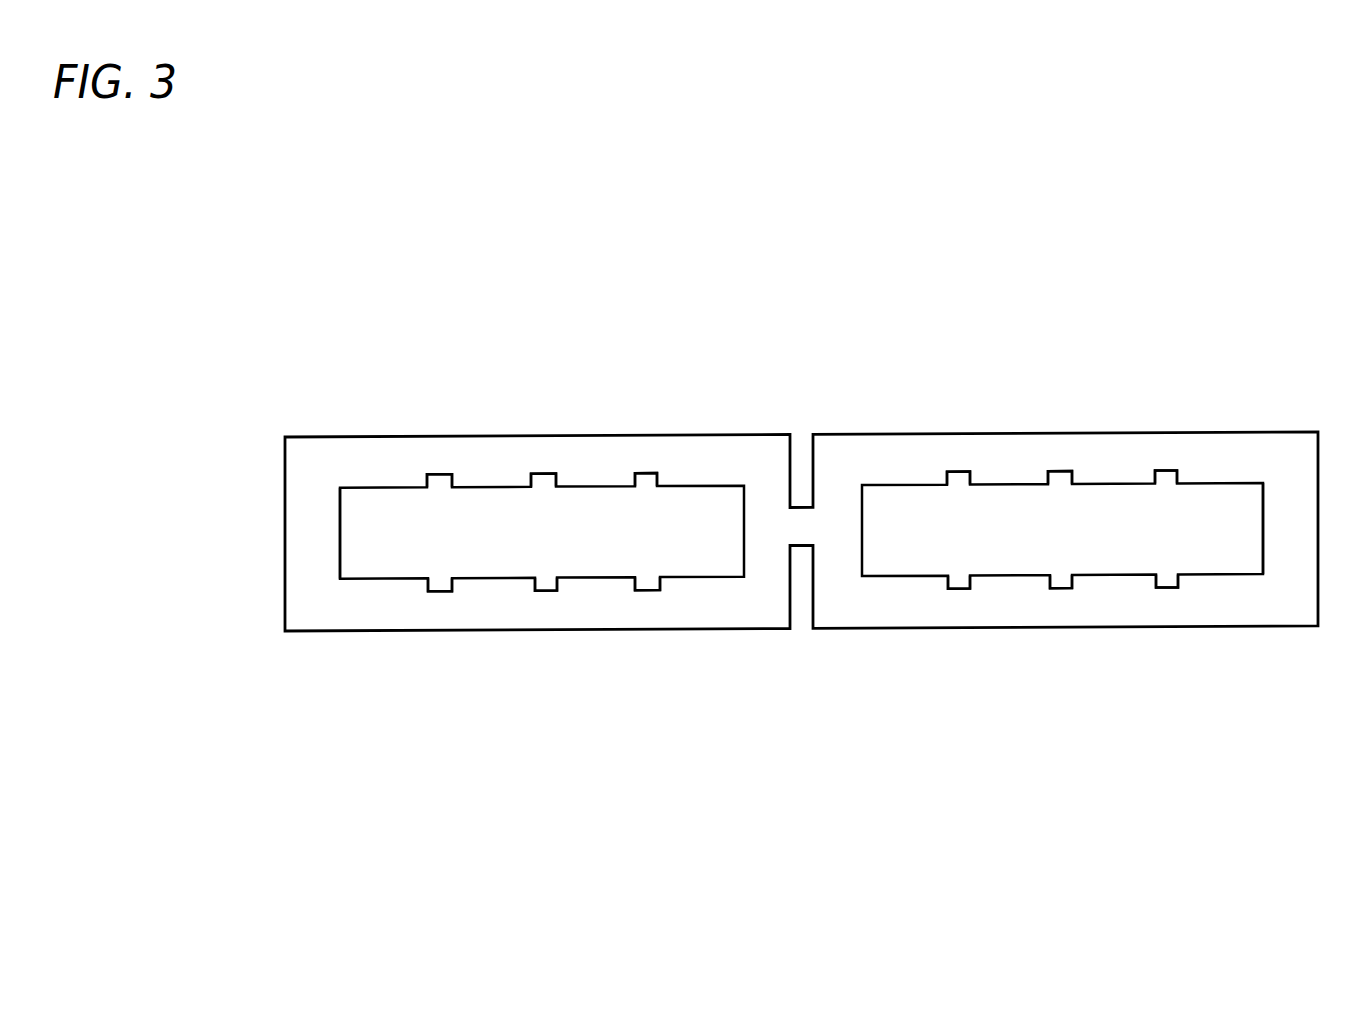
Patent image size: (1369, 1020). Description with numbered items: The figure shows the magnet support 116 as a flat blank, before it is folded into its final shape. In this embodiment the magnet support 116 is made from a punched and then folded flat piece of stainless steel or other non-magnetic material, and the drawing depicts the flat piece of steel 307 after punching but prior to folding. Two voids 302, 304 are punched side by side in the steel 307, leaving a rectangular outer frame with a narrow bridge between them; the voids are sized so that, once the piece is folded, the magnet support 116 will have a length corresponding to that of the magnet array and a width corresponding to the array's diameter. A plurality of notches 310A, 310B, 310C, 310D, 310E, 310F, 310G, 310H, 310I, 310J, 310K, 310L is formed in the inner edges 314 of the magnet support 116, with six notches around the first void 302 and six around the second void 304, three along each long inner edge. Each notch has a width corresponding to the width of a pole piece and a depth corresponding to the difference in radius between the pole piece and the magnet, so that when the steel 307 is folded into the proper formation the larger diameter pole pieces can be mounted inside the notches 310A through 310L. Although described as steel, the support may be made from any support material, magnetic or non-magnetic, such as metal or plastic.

The magnet support 116 is at (813, 270).
The void 302 is at (600, 513).
The void 304 is at (1108, 498).
The flat piece of steel 307 is at (1283, 458).
The inner edges 314 is at (387, 488).
The notch 310A is at (440, 475).
The notch 310B is at (545, 475).
The notch 310C is at (648, 475).
The notch 310D is at (438, 592).
The notch 310E is at (543, 592).
The notch 310F is at (645, 592).
The notch 310G is at (958, 472).
The notch 310H is at (1060, 472).
The notch 310I is at (1165, 472).
The notch 310J is at (957, 588).
The notch 310K is at (1062, 588).
The notch 310L is at (1163, 588).